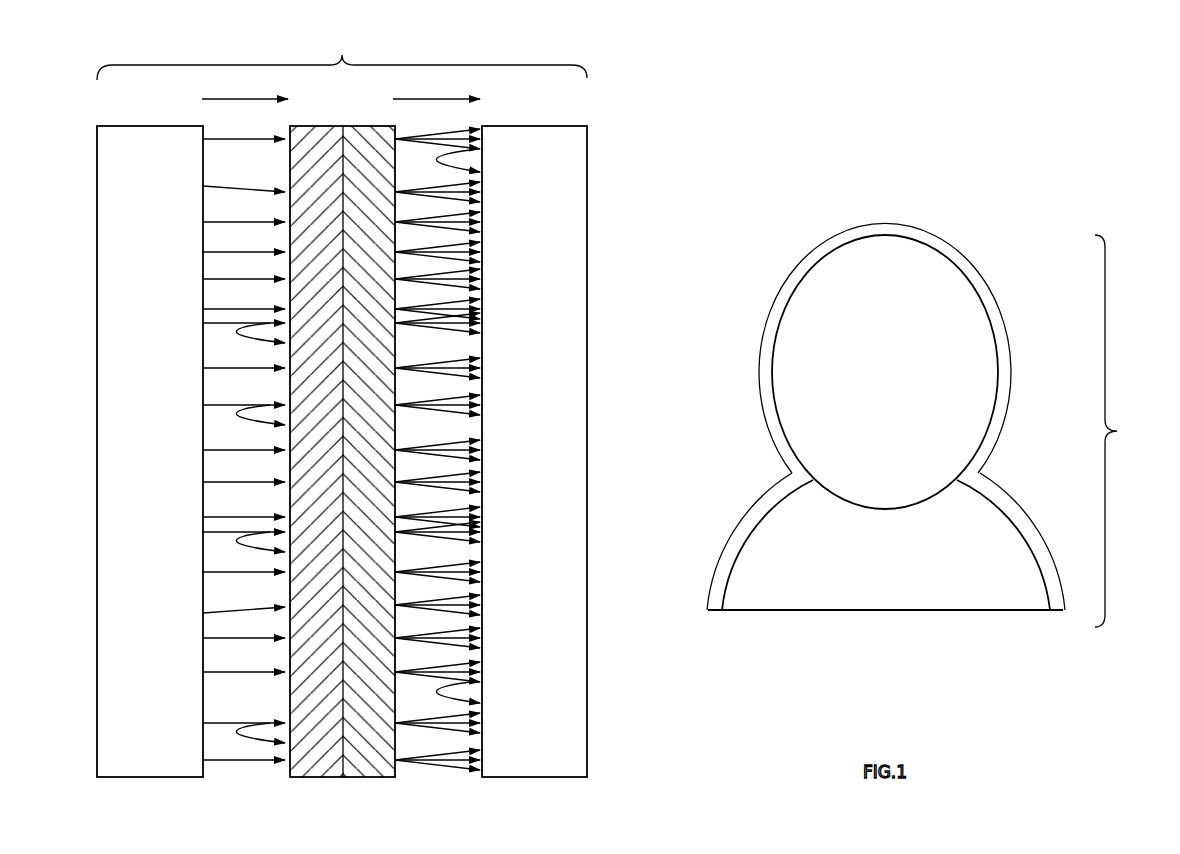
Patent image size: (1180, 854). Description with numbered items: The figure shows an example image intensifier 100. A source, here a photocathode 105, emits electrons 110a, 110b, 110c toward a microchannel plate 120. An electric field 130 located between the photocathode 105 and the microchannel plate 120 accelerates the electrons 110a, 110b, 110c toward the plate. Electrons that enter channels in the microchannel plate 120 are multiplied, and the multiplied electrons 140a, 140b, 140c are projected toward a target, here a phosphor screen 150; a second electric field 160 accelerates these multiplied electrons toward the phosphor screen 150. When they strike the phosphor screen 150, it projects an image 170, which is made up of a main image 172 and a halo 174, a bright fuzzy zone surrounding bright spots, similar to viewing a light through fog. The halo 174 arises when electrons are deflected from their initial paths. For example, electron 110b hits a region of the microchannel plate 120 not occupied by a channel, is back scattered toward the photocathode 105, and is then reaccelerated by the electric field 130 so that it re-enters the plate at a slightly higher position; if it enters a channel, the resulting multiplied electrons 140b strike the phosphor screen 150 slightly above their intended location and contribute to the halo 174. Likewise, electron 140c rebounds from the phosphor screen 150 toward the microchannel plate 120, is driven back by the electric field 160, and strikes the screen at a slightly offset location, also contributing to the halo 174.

The image intensifier 100 is at (342, 56).
The photocathode 105 is at (97, 683).
The electron 110a is at (225, 220).
The electron 110b is at (250, 335).
The electron 110c is at (215, 638).
The microchannel plate 120 is at (343, 777).
The electric field 130 is at (213, 100).
The multiplied electrons 140a is at (450, 213).
The multiplied electrons 140b is at (437, 337).
The electron 140c is at (440, 640).
The phosphor screen 150 is at (587, 560).
The electric field 160 is at (460, 99).
The image 170 is at (930, 415).
The main image 172 is at (808, 270).
The halo 174 is at (997, 300).